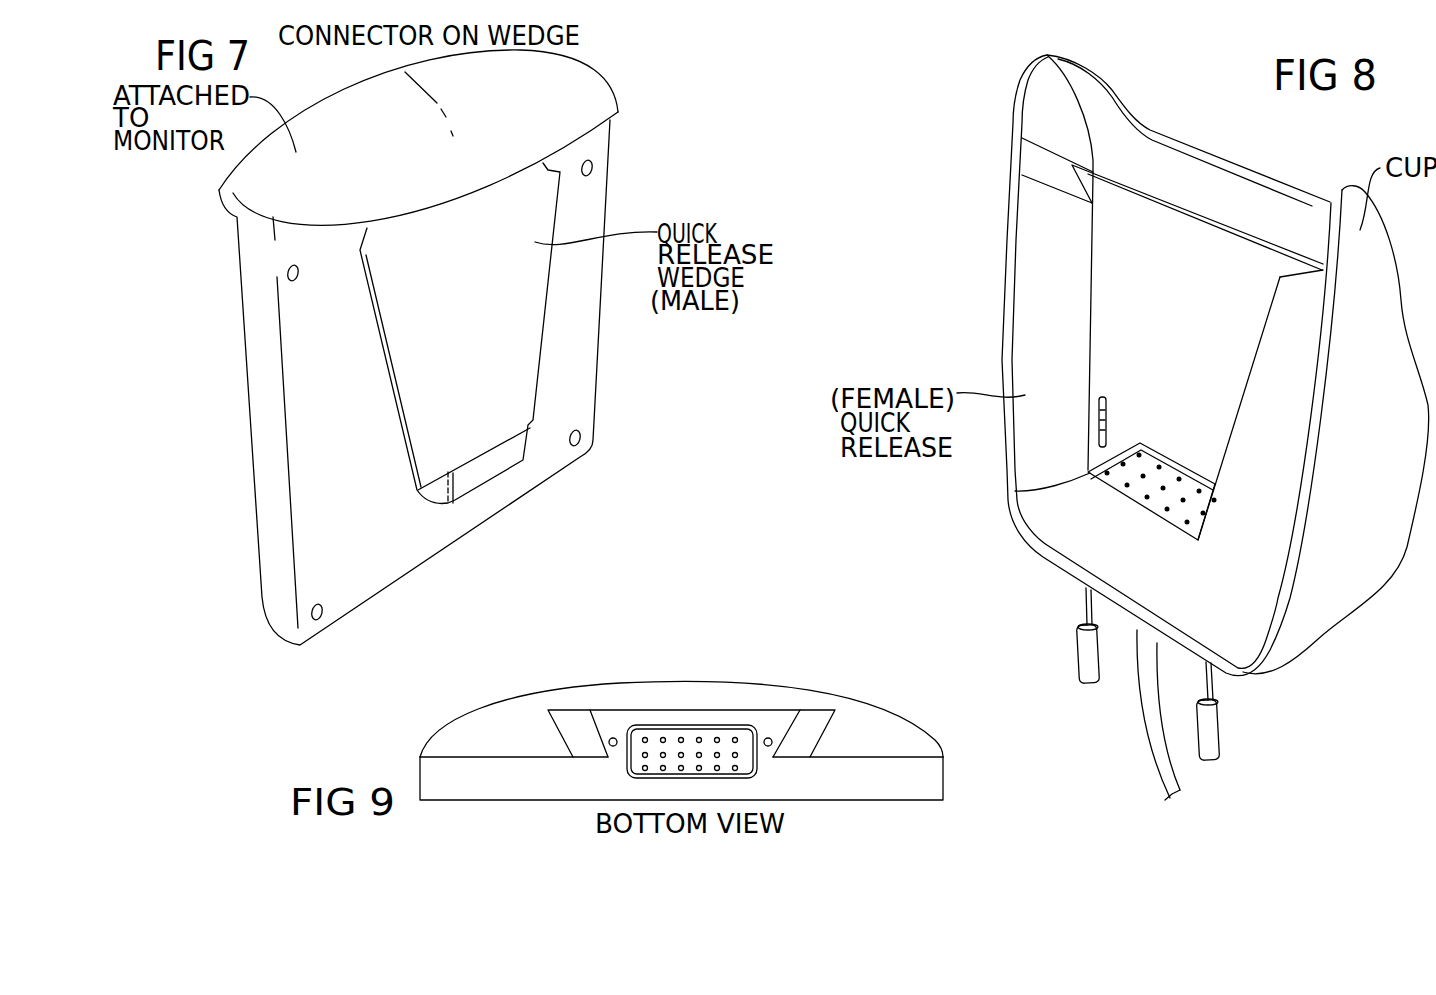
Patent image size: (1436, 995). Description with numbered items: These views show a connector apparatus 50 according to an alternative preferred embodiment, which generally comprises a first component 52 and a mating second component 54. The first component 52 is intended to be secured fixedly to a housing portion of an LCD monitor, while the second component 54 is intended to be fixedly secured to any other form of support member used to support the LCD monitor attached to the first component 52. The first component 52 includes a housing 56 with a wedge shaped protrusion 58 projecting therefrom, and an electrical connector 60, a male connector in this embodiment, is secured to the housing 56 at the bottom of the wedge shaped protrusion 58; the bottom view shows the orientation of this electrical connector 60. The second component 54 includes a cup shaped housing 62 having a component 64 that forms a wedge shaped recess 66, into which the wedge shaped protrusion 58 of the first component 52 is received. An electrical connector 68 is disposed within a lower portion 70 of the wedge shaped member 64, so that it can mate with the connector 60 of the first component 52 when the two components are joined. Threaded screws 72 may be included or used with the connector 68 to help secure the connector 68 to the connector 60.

In FIG. 7, the connector apparatus 50 is at (597, 476).
In FIG. 8, the connector apparatus 50 is at (1006, 543).
In FIG. 7, the first component 52 is at (580, 190).
In FIG. 8, the second component 54 is at (1327, 617).
In FIG. 7, the housing 56 is at (307, 293).
In FIG. 9, the housing 56 is at (920, 746).
In FIG. 7, the wedge shaped protrusion 58 is at (527, 322).
In FIG. 9, the wedge shaped protrusion 58 is at (810, 730).
In FIG. 7, the electrical connector 60 is at (480, 477).
In FIG. 9, the electrical connector 60 is at (748, 733).
In FIG. 8, the cup shaped housing 62 is at (1007, 218).
In FIG. 8, the component 64 is at (1032, 165).
In FIG. 8, the wedge shaped recess 66 is at (1177, 240).
In FIG. 8, the electrical connector 68 is at (1018, 492).
In FIG. 8, the lower portion 70 is at (1237, 640).
In FIG. 8, the threaded screws 72 is at (1087, 650).